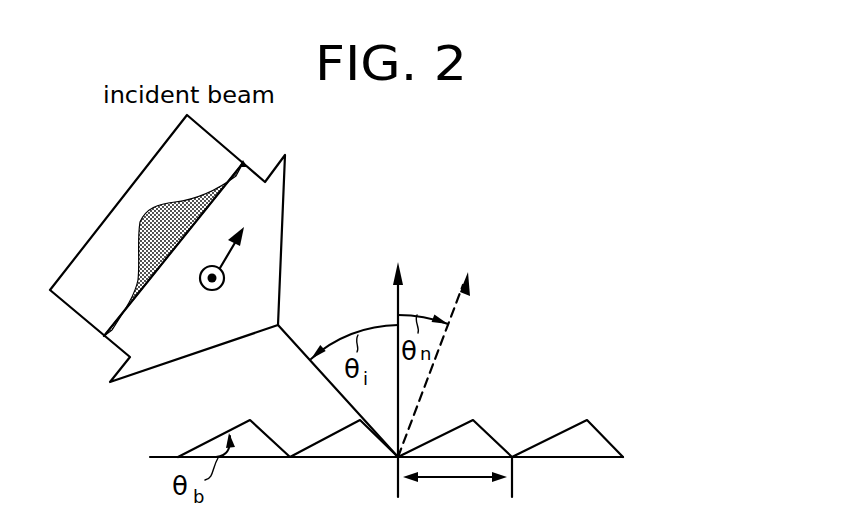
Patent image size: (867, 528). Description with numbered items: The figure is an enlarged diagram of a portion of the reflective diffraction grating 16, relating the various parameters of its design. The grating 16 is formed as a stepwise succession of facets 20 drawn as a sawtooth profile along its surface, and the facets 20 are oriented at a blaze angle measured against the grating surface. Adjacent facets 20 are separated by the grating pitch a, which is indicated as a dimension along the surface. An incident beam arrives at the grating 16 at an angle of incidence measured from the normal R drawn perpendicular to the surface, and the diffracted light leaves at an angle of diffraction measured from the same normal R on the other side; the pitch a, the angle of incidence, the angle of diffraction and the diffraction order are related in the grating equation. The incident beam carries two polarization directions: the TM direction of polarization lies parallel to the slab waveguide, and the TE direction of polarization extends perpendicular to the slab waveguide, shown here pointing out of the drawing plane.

The reflective diffraction grating 16 is at (590, 466).
The facets 20 is at (212, 440).
The radius R is at (397, 292).
The grating pitch a is at (447, 480).
The transverse electric direction of polarization TE is at (206, 300).
The transverse magnetic direction of polarization TM is at (245, 231).